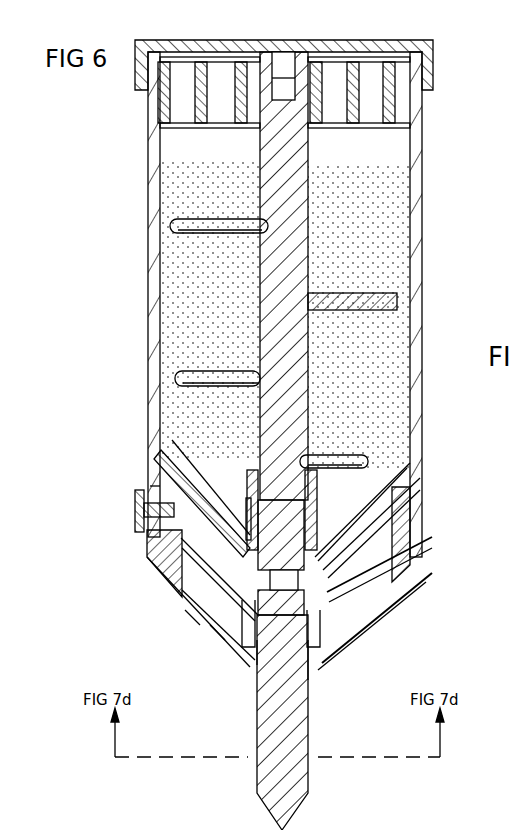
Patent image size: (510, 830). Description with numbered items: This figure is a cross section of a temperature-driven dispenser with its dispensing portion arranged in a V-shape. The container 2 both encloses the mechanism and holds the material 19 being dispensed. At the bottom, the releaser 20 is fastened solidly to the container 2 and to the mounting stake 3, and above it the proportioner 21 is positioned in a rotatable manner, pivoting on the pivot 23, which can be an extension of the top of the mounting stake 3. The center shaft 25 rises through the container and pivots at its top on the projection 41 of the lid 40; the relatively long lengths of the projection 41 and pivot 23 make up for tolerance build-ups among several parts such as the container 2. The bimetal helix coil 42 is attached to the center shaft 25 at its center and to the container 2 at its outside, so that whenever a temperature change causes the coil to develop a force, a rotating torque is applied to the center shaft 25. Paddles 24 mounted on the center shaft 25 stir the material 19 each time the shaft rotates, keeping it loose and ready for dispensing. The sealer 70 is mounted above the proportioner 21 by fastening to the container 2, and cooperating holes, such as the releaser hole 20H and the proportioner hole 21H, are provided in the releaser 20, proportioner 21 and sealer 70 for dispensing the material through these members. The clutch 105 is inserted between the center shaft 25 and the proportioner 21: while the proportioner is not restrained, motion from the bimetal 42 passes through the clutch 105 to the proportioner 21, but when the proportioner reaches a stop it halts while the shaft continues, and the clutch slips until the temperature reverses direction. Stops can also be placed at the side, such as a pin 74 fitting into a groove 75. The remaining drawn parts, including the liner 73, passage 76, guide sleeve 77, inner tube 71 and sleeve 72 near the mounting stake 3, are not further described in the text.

The container 2 is at (148, 124).
The mounting stake 3 is at (308, 718).
The material 19 is at (166, 194).
The releaser 20 is at (175, 582).
The casing opening 20H is at (355, 567).
The proportioner 21 is at (150, 537).
The base opening 21H is at (186, 626).
The pivot 23 is at (312, 675).
The paddles 24 is at (170, 226).
The center shaft 25 is at (262, 326).
The lid 40 is at (437, 46).
The projection 41 is at (284, 63).
The bimetal helix coil 42 is at (358, 62).
The sealer 70 is at (172, 466).
The inner tube 71 is at (246, 640).
The sleeve 72 is at (257, 658).
The liner 73 is at (247, 537).
The pin 74 is at (135, 506).
The groove 75 is at (152, 490).
The passage 76 is at (180, 456).
The guide sleeve 77 is at (232, 630).
The clutch 105 is at (212, 628).